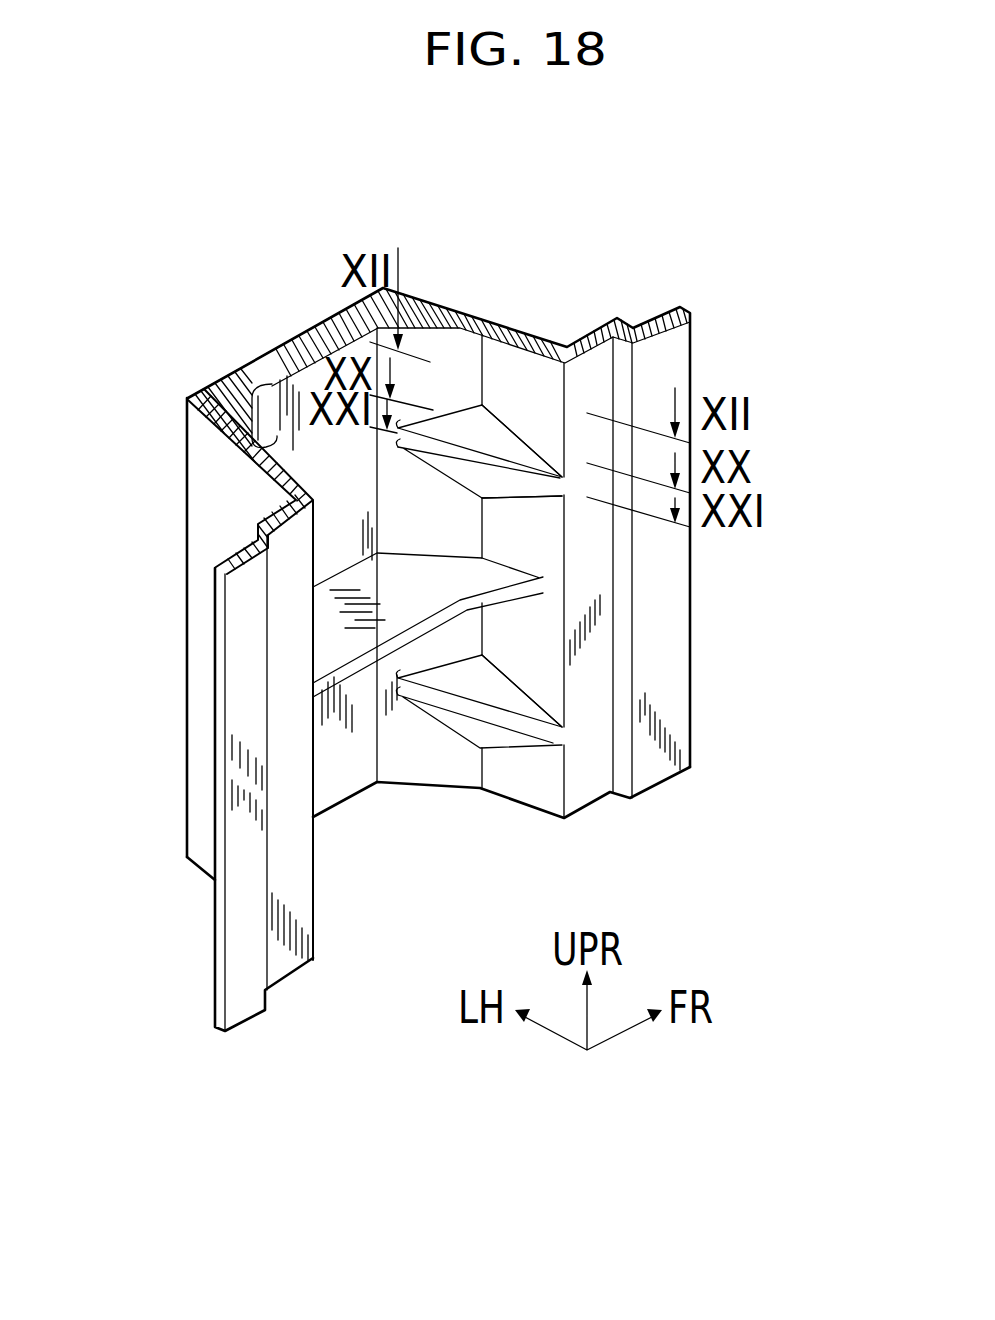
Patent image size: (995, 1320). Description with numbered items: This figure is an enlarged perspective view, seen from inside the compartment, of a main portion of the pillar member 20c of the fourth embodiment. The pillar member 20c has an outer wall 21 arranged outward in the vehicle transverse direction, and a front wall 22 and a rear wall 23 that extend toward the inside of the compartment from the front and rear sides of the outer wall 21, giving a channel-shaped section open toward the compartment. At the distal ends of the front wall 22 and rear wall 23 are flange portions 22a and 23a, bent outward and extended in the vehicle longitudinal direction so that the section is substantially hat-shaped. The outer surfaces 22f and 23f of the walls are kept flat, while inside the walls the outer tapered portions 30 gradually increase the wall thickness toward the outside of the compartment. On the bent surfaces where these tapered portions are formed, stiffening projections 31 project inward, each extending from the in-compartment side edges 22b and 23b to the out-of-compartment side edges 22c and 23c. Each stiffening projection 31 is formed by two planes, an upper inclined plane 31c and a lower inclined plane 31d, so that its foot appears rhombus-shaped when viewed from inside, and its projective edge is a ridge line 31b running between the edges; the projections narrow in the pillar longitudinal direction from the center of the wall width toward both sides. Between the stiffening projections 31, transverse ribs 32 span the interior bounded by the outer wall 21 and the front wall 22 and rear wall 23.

The pillar member 20c is at (645, 255).
The outer wall 21 is at (285, 345).
The front wall 22 is at (483, 335).
The flange portion 22a is at (672, 708).
The edge 22b is at (565, 767).
The edge 22c is at (398, 728).
The outer surface 22f is at (432, 300).
The rear wall 23 is at (205, 548).
The flange portion 23a is at (240, 1010).
The edge 23b is at (287, 962).
The edge 23c is at (257, 372).
The outer surface 23f is at (205, 525).
The outer tapered portion 30 is at (465, 343).
The stiffening projection 31 is at (527, 510).
The ridge line 31b is at (525, 475).
The inclined plane 31c is at (477, 430).
The inclined plane 31d is at (510, 486).
The transverse rib 32 is at (323, 643).